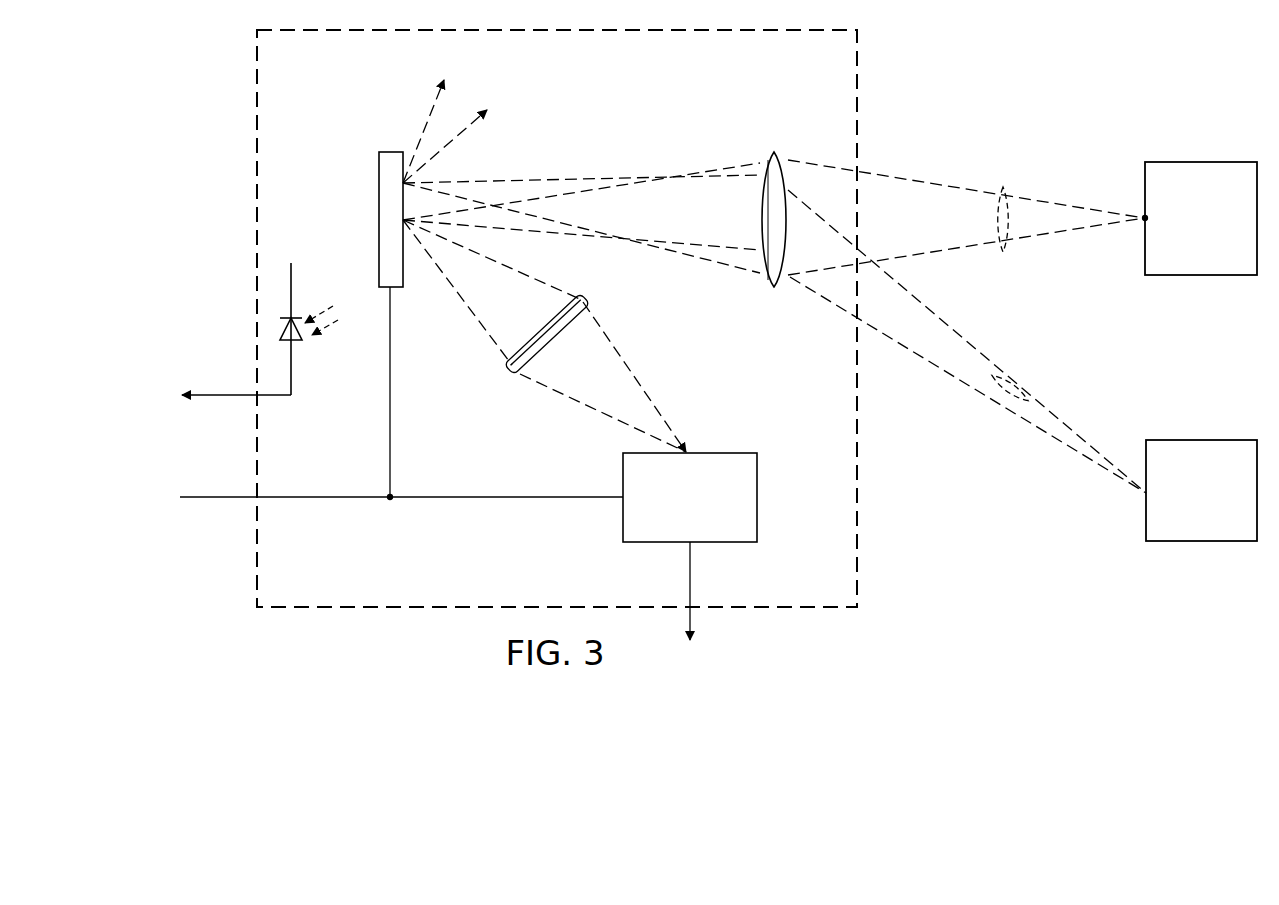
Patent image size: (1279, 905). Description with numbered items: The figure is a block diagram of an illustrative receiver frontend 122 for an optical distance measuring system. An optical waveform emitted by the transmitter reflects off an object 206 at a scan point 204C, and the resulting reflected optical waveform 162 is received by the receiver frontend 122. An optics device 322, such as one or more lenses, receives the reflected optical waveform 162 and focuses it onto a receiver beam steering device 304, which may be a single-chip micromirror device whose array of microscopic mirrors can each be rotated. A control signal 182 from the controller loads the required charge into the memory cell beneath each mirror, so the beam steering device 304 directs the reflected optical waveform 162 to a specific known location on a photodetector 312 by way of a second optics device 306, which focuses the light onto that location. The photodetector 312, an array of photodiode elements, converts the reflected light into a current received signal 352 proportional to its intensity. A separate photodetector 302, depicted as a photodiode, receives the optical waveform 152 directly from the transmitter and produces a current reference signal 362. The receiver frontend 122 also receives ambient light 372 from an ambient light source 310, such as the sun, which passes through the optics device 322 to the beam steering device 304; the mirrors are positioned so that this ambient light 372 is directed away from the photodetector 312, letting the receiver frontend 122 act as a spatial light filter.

The receiver frontend 122 is at (578, 104).
The receiver beam steering device 304 is at (390, 152).
The optics device 322 is at (772, 152).
The optics device 306 is at (512, 375).
The photodetector 312 is at (623, 518).
The current received signal 352 is at (690, 564).
The control signal 182 is at (226, 498).
The photodetector 302 is at (298, 342).
The optical waveform 152 is at (320, 298).
The current reference signal 362 is at (224, 394).
The reflected optical waveform 162 is at (1004, 187).
The object 206 is at (1203, 162).
The scan point 204C is at (1142, 215).
The ambient light 372 is at (998, 402).
The ambient light source 310 is at (1203, 542).